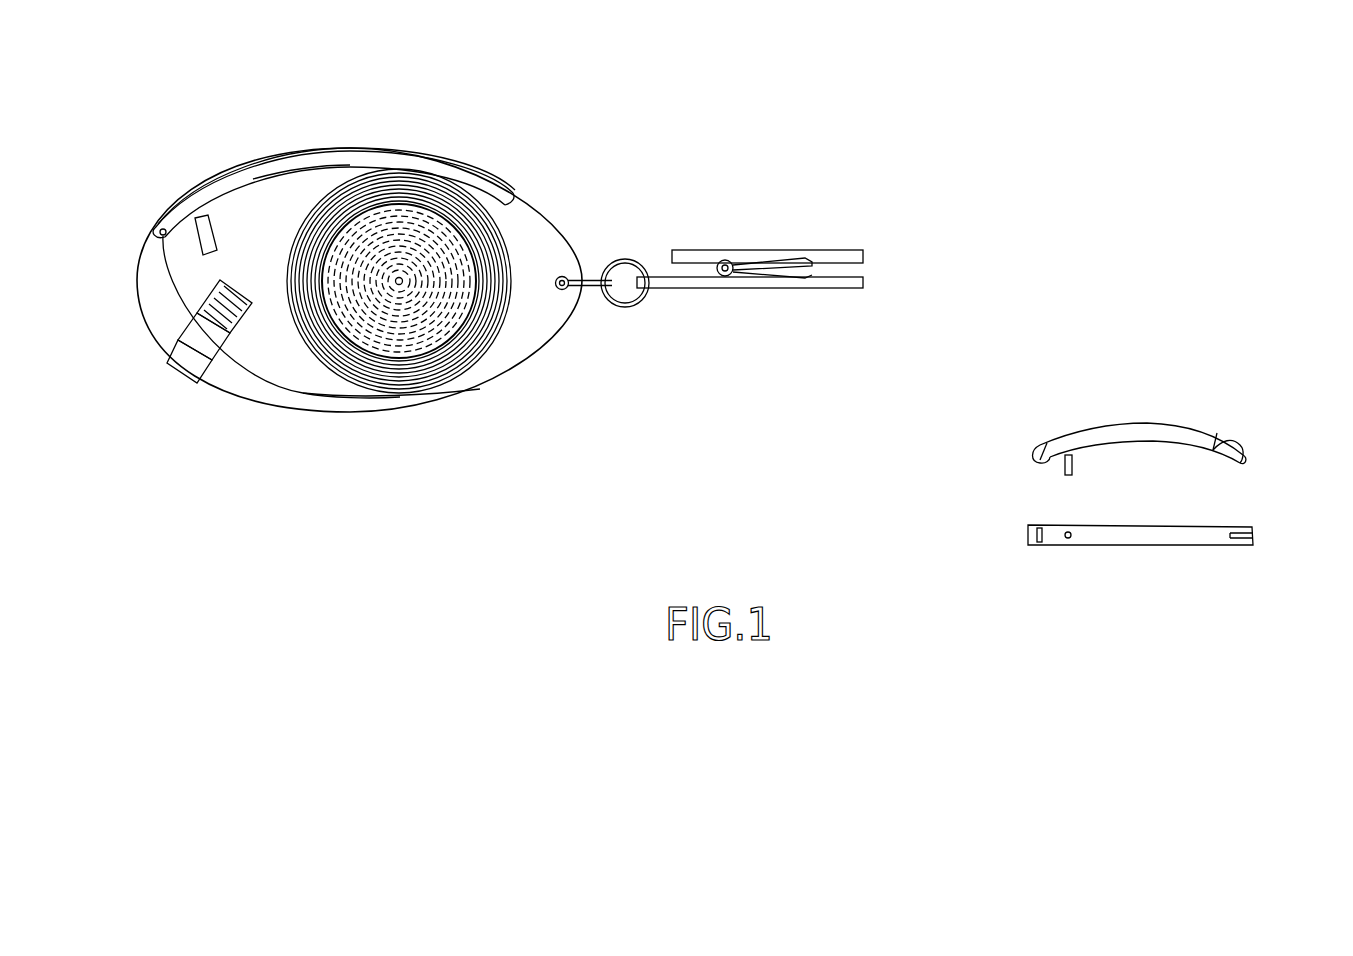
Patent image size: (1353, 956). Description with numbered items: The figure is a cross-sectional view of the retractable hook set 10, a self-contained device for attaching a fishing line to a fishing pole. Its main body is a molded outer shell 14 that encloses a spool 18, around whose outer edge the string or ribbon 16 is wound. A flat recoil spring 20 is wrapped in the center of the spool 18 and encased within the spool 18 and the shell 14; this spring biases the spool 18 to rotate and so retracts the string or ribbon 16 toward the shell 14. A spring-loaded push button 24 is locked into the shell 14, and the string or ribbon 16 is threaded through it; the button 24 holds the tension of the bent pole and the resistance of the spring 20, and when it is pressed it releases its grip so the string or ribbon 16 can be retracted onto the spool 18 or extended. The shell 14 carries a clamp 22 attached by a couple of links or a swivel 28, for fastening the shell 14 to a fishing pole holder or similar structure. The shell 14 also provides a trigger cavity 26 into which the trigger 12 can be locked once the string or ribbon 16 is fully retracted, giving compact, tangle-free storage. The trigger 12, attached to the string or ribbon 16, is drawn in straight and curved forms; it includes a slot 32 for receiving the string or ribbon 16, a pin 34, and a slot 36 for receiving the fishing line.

The retractable hook set 10 is at (546, 381).
The trigger 12 is at (258, 170).
The outer shell 14 is at (406, 288).
The string or ribbon 16 is at (303, 393).
The spool 18 is at (460, 222).
The flat recoil spring 20 is at (400, 228).
The clamp 22 is at (851, 252).
The push button 24 is at (185, 373).
The trigger cavity 26 is at (305, 167).
The swivel 28 is at (600, 268).
The slot 32 is at (1037, 452).
The pin 34 is at (1070, 531).
The slot 36 is at (1250, 456).